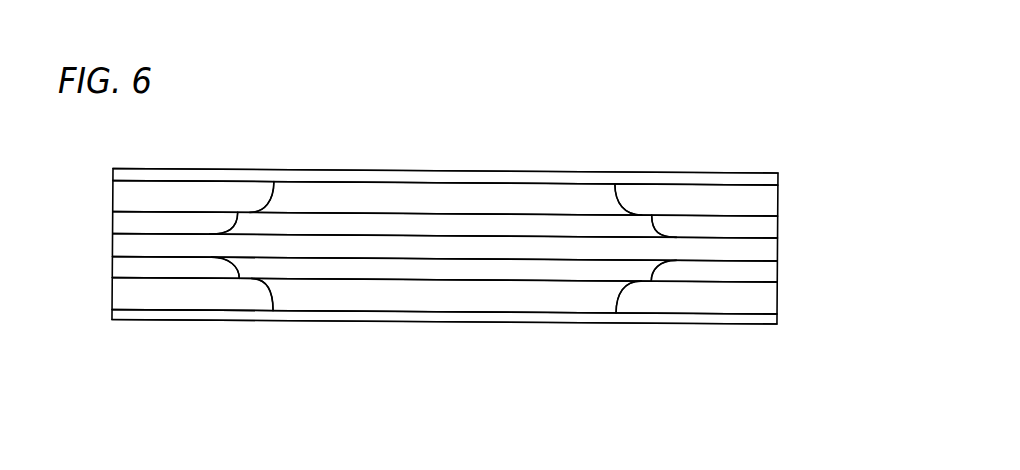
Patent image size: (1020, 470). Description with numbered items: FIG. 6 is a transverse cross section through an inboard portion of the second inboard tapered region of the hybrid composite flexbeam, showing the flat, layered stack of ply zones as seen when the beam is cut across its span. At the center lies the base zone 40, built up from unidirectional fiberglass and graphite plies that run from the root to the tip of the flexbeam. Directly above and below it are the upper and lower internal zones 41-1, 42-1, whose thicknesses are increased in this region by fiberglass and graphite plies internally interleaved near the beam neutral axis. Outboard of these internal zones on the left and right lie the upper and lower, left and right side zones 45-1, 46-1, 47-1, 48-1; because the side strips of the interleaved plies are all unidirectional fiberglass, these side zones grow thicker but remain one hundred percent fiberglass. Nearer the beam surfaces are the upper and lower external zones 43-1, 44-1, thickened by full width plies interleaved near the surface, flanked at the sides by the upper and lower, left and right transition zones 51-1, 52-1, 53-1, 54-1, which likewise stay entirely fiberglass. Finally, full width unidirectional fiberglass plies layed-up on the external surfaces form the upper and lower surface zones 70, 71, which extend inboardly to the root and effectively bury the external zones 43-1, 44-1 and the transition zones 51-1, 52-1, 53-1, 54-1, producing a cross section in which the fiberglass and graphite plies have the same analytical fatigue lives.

The base zone 40 is at (438, 248).
The upper internal zone 41-1 is at (317, 223).
The lower internal zone 42-1 is at (323, 270).
The upper external zone 43-1 is at (428, 200).
The lower external zone 44-1 is at (517, 302).
The upper left side zone 45-1 is at (123, 223).
The lower left side zone 46-1 is at (130, 268).
The upper right side zone 47-1 is at (763, 229).
The lower right side zone 48-1 is at (762, 269).
The upper left transition zone 51-1 is at (180, 192).
The lower left transition zone 52-1 is at (178, 297).
The upper right transition zone 53-1 is at (660, 198).
The lower right transition zone 54-1 is at (682, 300).
The upper surface zone 70 is at (538, 178).
The lower surface zone 71 is at (598, 318).